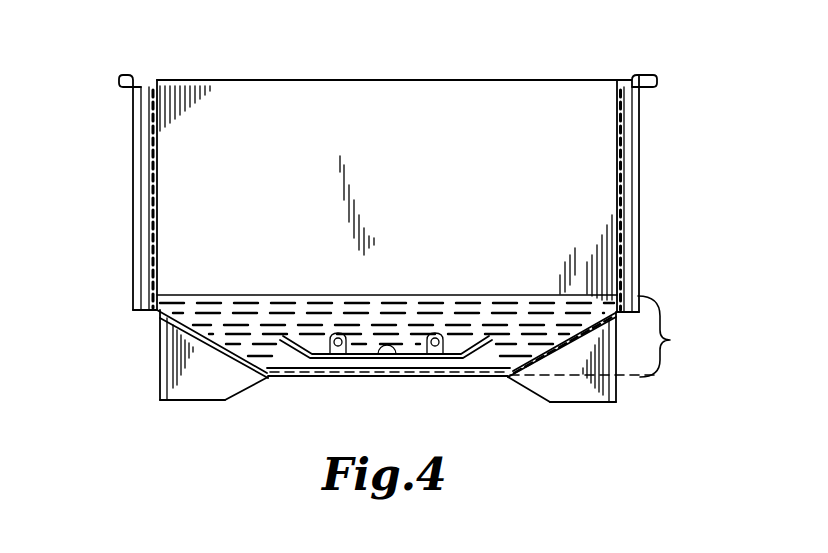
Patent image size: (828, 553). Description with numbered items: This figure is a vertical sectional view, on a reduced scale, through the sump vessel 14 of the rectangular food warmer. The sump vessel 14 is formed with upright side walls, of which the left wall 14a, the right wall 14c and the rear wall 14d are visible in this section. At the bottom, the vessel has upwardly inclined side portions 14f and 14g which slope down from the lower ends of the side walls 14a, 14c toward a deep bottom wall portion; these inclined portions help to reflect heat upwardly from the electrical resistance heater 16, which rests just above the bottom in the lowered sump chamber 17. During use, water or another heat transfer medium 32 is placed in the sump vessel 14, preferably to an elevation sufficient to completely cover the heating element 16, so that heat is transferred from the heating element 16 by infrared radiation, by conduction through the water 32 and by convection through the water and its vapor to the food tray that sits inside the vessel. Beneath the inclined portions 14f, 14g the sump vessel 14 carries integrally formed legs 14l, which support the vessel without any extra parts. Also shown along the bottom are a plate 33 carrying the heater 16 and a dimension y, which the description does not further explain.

The sump vessel 14 is at (505, 80).
The upright side wall 14a is at (153, 190).
The upright side wall 14c is at (622, 185).
The upright side wall 14d is at (463, 167).
The upwardly inclined side portion 14f is at (245, 366).
The upwardly inclined side portion 14g is at (541, 364).
The legs 14l is at (172, 398).
The electrical resistance heater 16 is at (338, 332).
The sump chamber 17 is at (607, 336).
The water 32 is at (228, 303).
The baffle plate 33 is at (380, 352).
The bottom floor y is at (483, 372).